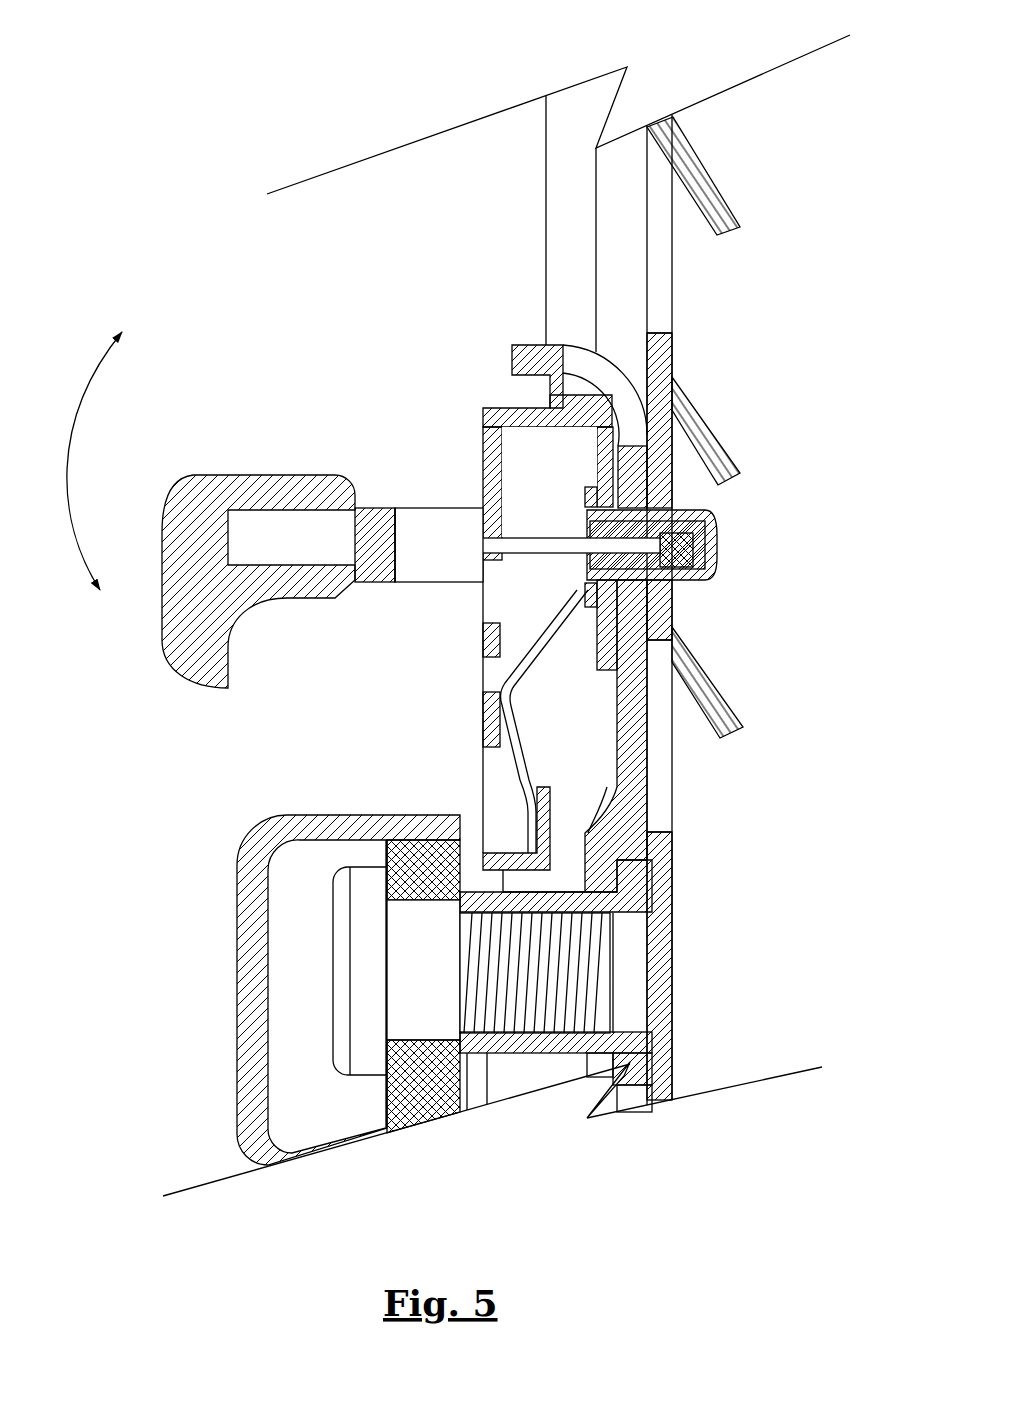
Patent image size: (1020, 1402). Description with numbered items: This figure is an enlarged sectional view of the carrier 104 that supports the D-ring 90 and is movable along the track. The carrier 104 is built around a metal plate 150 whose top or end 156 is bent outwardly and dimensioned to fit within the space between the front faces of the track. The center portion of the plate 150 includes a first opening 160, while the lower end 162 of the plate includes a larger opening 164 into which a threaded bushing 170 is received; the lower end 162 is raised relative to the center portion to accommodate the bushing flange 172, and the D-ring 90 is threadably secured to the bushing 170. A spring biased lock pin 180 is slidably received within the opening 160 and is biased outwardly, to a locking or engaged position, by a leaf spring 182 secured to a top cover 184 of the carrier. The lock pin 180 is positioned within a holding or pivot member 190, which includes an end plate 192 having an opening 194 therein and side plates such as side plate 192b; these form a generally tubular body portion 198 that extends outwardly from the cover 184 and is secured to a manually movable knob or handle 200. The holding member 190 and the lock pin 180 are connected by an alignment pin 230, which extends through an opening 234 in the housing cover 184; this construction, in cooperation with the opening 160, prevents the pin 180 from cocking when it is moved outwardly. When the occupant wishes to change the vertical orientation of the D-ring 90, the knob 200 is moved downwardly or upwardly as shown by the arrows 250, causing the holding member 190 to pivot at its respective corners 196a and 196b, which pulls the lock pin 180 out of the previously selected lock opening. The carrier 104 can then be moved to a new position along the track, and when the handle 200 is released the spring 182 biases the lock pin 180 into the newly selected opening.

The D-ring 90 is at (230, 997).
The carrier 104 is at (347, 358).
The metal plate 150 is at (630, 743).
The top or end of the plate 156 is at (528, 345).
The first opening 160 is at (672, 500).
The lower end of the plate 162 is at (587, 1067).
The larger opening 164 is at (605, 913).
The threaded bushing 170 is at (476, 885).
The bushing flange 172 is at (637, 1037).
The lock pin 180 is at (712, 522).
The leaf spring 182 is at (518, 778).
The top cover 184 is at (483, 422).
The holding or pivot member 190 is at (437, 540).
The end plate 192 is at (600, 617).
The side plate 192b is at (416, 527).
The opening 194 is at (628, 455).
The corner 196a is at (563, 360).
The corner 196b is at (610, 672).
The tubular body portion 198 is at (417, 568).
The knob or handle 200 is at (205, 515).
The alignment pin 230 is at (550, 540).
The opening in the housing cover 234 is at (475, 560).
The arrows 250 is at (106, 464).